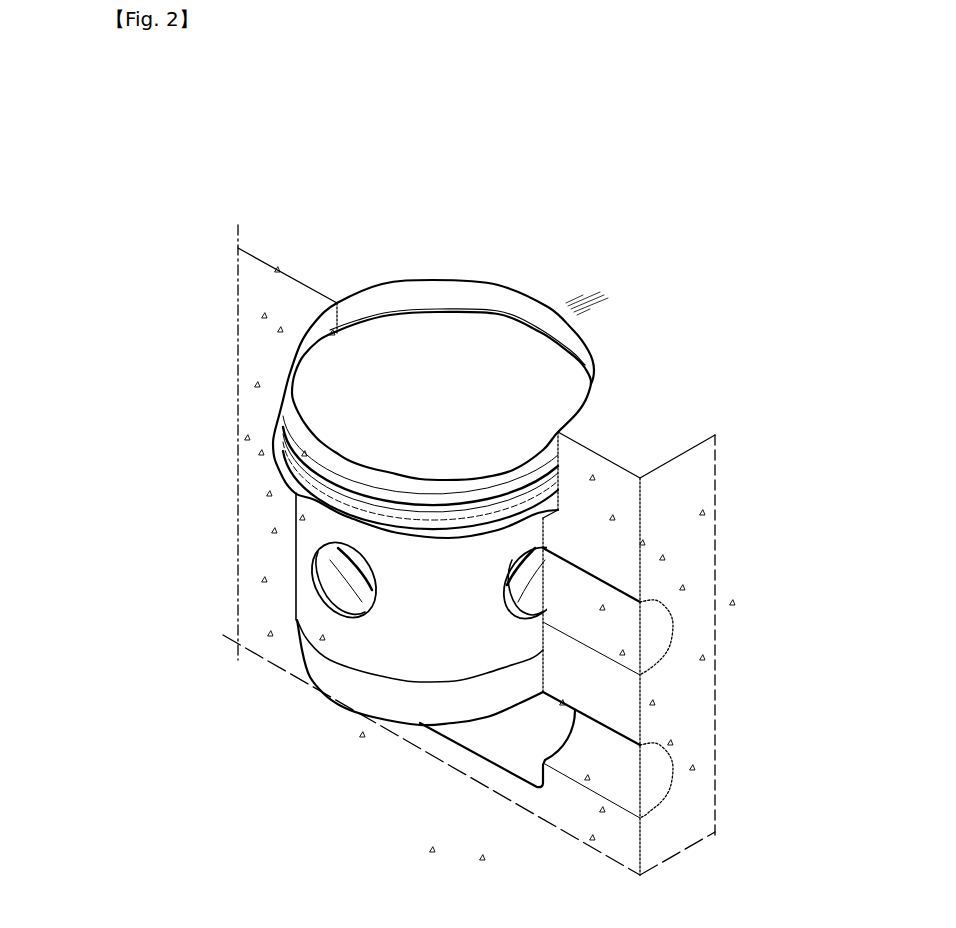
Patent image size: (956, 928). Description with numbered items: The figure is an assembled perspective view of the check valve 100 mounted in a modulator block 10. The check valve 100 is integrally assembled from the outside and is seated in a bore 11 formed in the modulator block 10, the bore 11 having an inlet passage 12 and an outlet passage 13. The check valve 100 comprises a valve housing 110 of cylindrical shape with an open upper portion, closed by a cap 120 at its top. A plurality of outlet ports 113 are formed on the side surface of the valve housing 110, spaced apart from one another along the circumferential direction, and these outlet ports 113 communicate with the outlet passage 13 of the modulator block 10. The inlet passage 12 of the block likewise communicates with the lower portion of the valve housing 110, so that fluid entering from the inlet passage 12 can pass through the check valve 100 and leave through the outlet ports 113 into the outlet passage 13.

The modulator block 10 is at (252, 290).
The bore 11 is at (543, 633).
The inlet passage 12 is at (625, 758).
The outlet passage 13 is at (623, 620).
The check valve 100 is at (445, 451).
The valve housing 110 is at (372, 649).
The outlet port 113 is at (325, 582).
The cap 120 is at (560, 385).